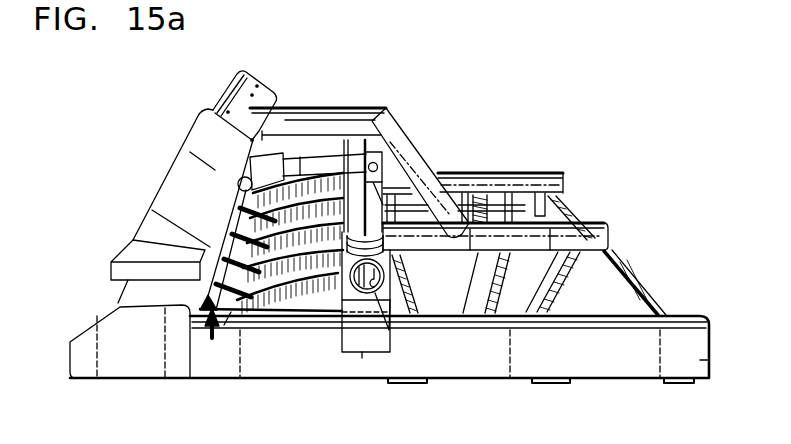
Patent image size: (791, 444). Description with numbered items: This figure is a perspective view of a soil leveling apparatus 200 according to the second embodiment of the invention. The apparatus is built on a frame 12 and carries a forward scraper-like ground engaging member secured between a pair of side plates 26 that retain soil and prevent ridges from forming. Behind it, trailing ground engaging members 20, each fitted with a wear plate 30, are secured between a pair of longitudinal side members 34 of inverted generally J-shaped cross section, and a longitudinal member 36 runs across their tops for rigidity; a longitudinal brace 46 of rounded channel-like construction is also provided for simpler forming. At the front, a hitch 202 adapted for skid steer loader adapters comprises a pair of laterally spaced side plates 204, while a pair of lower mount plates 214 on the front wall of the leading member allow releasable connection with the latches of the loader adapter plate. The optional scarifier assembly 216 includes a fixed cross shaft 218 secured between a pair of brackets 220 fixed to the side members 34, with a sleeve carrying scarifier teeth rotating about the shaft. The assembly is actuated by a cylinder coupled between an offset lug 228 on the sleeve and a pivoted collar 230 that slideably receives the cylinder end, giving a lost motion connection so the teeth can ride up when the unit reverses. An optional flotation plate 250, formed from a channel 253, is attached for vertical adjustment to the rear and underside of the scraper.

The frame 12 is at (525, 168).
The trailing ground engaging members 20 is at (615, 262).
The side plates 26 is at (120, 370).
The wear plate 30 is at (404, 383).
The longitudinal side members 34 is at (704, 360).
The longitudinal member 36 is at (585, 221).
The longitudinal brace 46 is at (335, 112).
The soil leveling apparatus 200 is at (447, 128).
The hitch 202 is at (197, 104).
The side plates 204 is at (258, 88).
The lower mount plates 214 is at (117, 278).
The scarifier assembly 216 is at (397, 117).
The fixed cross shaft 218 is at (374, 290).
The brackets 220 is at (356, 328).
The offset lug 228 is at (382, 172).
The collar 230 is at (238, 187).
The flotation plate 250 is at (212, 338).
The channel 253 is at (228, 318).